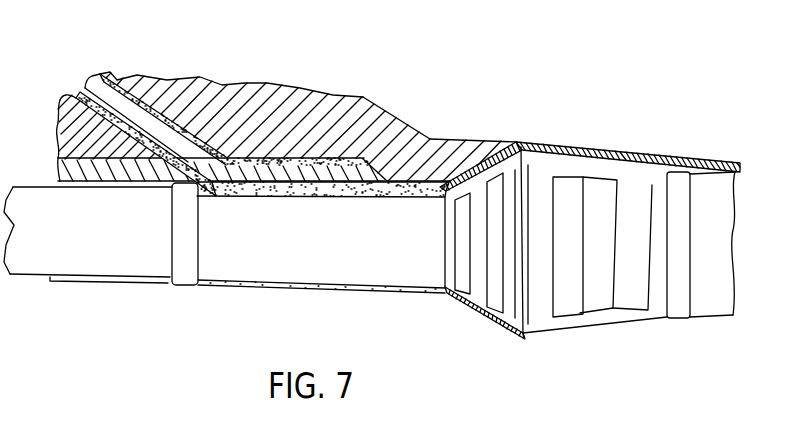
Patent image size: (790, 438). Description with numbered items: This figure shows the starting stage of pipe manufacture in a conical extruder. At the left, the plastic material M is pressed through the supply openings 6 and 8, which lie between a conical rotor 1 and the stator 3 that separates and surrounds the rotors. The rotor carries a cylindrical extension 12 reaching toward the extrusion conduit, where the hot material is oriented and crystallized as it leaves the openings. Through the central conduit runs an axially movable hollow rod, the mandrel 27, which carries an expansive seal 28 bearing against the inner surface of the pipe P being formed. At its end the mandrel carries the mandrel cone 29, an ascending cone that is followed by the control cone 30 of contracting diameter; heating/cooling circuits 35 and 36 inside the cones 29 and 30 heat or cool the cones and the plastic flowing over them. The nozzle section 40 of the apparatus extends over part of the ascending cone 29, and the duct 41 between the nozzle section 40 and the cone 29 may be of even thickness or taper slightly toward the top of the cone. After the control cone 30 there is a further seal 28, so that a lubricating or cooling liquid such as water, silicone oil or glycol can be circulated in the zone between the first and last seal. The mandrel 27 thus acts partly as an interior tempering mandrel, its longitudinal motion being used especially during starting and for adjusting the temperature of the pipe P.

The conical rotor 1 is at (163, 110).
The stator 3 is at (298, 123).
The supply opening 6 is at (62, 115).
The supply opening 8 is at (208, 136).
The cylindrical extension 12 is at (280, 163).
The mandrel 27 is at (80, 267).
The expansive seal 28 is at (177, 285).
The mandrel cone 29 is at (495, 327).
The control cone 30 is at (607, 330).
The heating/cooling circuit 35 is at (480, 163).
The heating/cooling circuit 36 is at (590, 178).
The nozzle section 40 is at (455, 148).
The duct 41 is at (518, 145).
The plastic material M is at (101, 73).
The pipe P is at (637, 157).